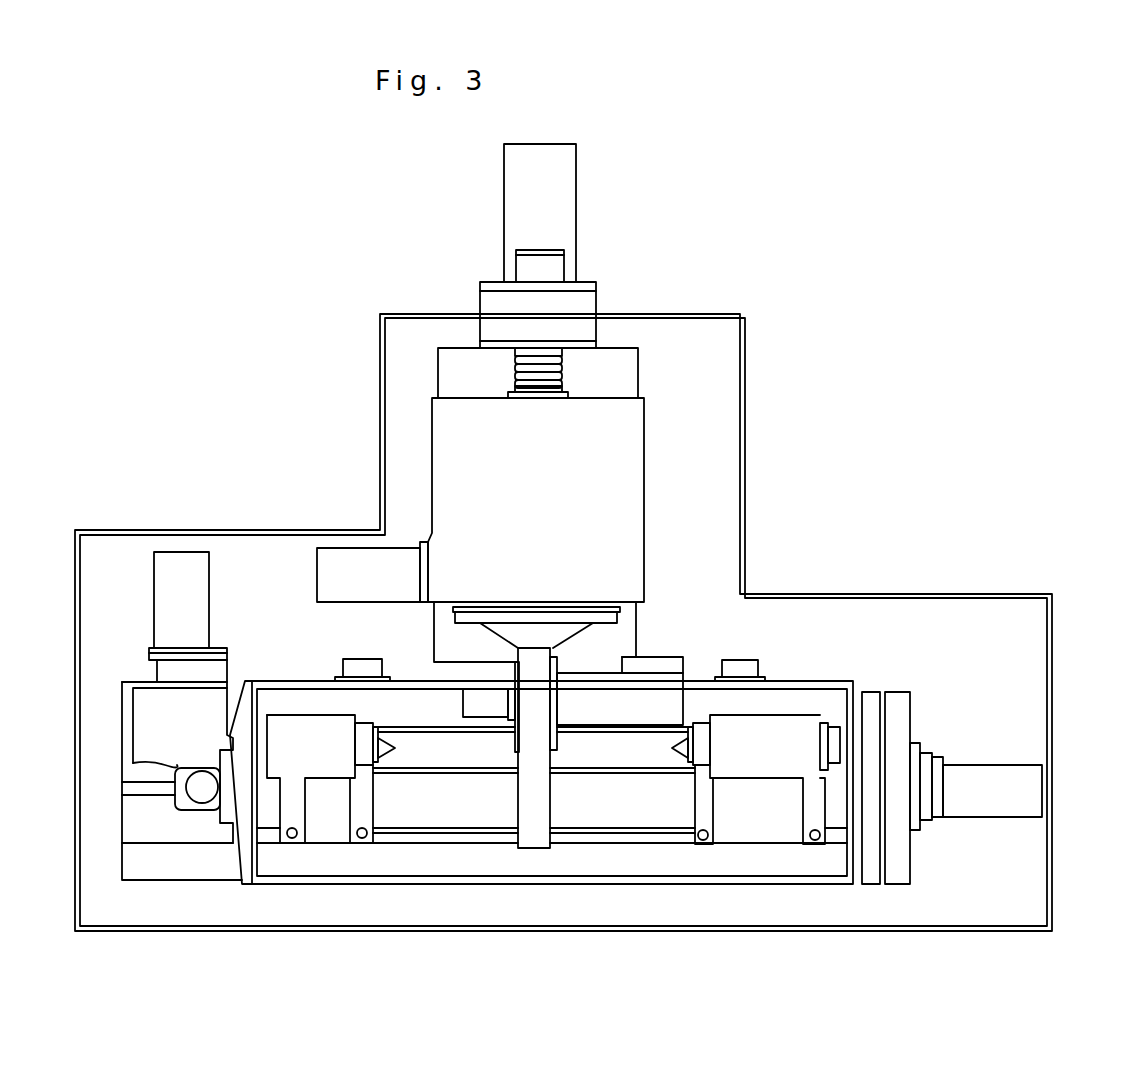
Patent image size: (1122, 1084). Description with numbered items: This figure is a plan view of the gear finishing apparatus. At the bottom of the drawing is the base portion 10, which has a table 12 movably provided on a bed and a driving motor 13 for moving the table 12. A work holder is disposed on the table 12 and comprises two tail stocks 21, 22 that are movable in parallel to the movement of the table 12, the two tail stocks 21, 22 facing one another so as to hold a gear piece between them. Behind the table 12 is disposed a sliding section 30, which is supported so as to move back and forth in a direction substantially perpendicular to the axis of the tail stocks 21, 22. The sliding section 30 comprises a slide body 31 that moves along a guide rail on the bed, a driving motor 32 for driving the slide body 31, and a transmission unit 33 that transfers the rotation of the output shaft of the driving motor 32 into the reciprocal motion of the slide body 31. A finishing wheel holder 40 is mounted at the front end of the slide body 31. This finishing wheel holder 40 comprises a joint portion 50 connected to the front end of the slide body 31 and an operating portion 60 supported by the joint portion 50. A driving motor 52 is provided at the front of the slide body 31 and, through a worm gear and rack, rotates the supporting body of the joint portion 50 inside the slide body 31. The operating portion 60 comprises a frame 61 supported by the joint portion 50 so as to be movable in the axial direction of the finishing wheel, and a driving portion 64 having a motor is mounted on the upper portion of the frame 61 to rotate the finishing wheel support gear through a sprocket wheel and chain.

The base portion 10 is at (890, 903).
The table 12 is at (768, 866).
The driving motor 13 is at (1028, 787).
The tail stock 21 is at (336, 766).
The tail stock 22 is at (776, 769).
The sliding section 30 is at (577, 373).
The slide body 31 is at (555, 475).
The driving motor 32 is at (572, 183).
The transmission unit 33 is at (587, 307).
The finishing wheel holder 40 is at (552, 726).
The joint portion 50 is at (617, 610).
The driving motor 52 is at (370, 595).
The operating portion 60 is at (567, 725).
The frame 61 is at (542, 807).
The driving portion 64 is at (628, 710).